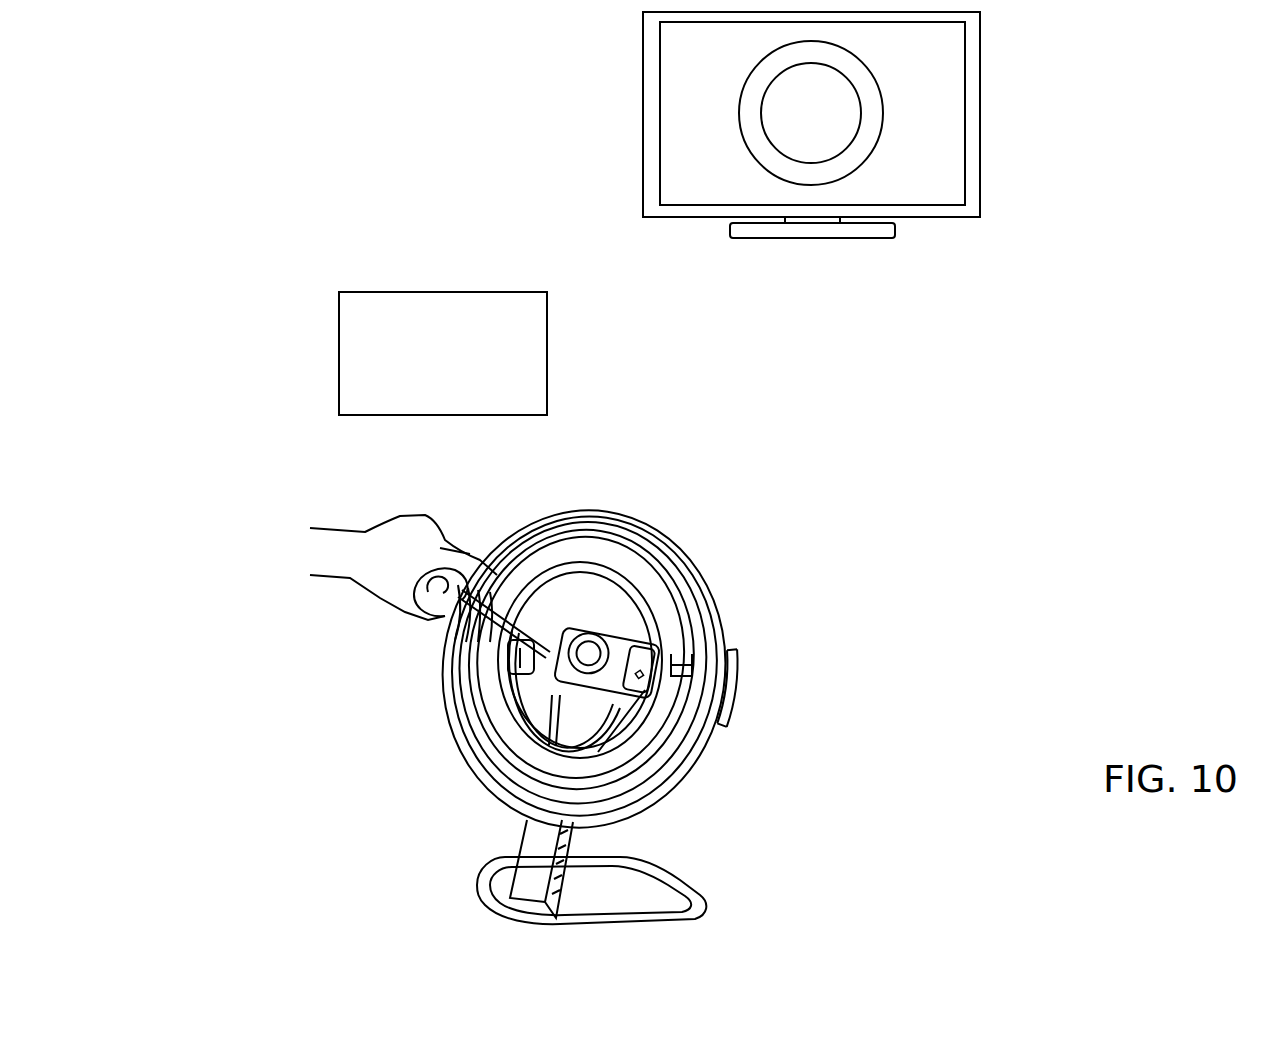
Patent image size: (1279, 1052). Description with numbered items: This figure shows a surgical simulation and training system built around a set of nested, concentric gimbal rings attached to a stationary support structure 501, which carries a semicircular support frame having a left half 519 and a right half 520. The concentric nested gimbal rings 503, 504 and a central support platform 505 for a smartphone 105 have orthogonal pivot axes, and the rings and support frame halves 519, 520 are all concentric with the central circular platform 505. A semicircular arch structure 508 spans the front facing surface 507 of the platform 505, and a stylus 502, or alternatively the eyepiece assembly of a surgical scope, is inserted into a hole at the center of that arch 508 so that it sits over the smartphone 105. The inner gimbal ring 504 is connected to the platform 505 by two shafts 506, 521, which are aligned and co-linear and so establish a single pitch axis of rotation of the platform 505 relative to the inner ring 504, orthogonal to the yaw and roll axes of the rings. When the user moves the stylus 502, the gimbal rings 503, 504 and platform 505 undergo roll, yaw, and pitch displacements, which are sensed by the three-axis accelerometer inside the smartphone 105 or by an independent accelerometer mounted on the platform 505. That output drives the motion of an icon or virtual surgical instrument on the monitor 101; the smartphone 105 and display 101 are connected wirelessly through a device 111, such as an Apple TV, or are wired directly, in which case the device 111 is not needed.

The monitor 101 is at (640, 160).
The wireless connection device 111 is at (330, 347).
The smartphone 105 is at (521, 683).
The stationary support structure 501 is at (470, 886).
The stylus 502 is at (505, 612).
The gimbal ring 503 is at (618, 507).
The inner gimbal ring 504 is at (670, 547).
The central support platform 505 is at (632, 743).
The shaft 506 is at (680, 670).
The front facing surface 507 is at (643, 622).
The semicircular arch structure 508 is at (558, 710).
The left half of semicircular support frame 519 is at (440, 641).
The right half of semicircular support frame 520 is at (735, 678).
The shaft 521 is at (492, 652).